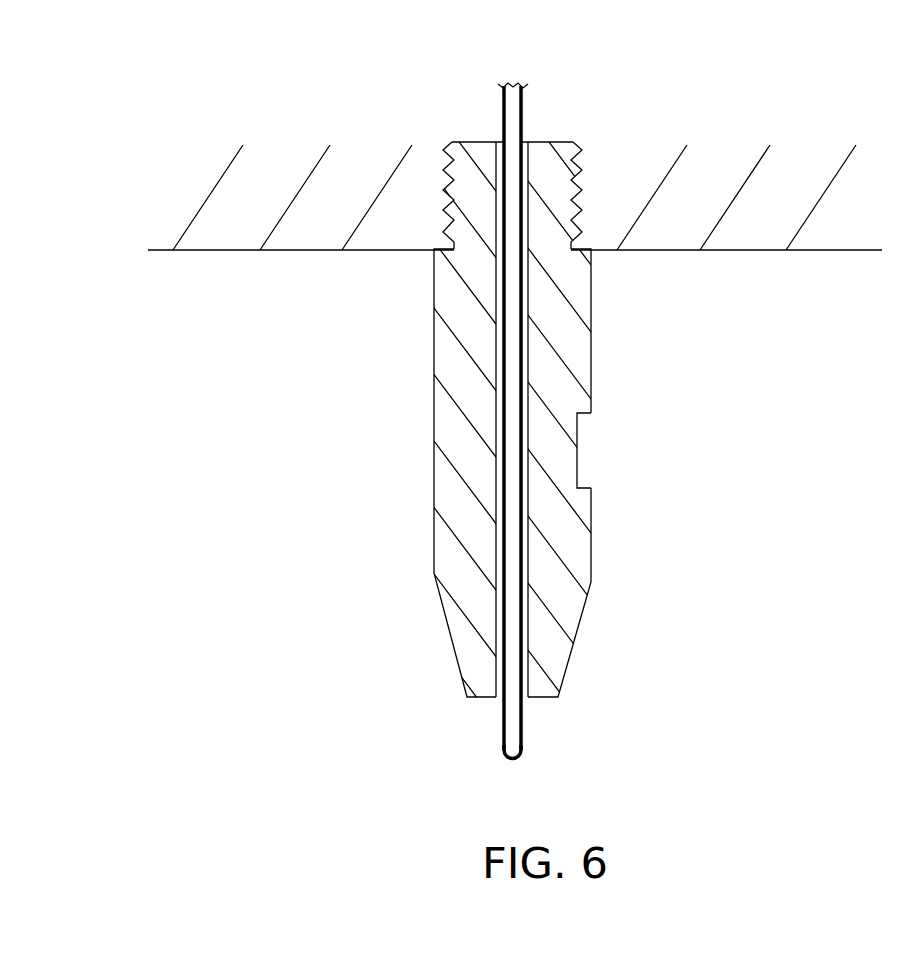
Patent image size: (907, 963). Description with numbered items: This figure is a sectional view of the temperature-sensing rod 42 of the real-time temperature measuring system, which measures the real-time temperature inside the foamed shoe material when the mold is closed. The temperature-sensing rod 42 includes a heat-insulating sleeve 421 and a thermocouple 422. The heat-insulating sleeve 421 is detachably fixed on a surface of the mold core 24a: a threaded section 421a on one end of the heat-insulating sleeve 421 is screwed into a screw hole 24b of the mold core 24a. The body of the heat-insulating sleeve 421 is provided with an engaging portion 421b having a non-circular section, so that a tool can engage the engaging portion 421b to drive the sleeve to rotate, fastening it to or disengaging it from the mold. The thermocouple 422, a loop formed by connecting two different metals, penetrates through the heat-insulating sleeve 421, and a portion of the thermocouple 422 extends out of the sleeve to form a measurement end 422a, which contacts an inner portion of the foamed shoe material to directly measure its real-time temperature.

The mold core 24a is at (737, 250).
The screw hole 24b is at (355, 150).
The temperature-sensing rod 42 is at (448, 433).
The heat-insulating sleeve 421 is at (590, 547).
The threaded section 421a is at (443, 185).
The engaging portion 421b is at (578, 437).
The thermocouple 422 is at (502, 545).
The measurement end 422a is at (512, 758).